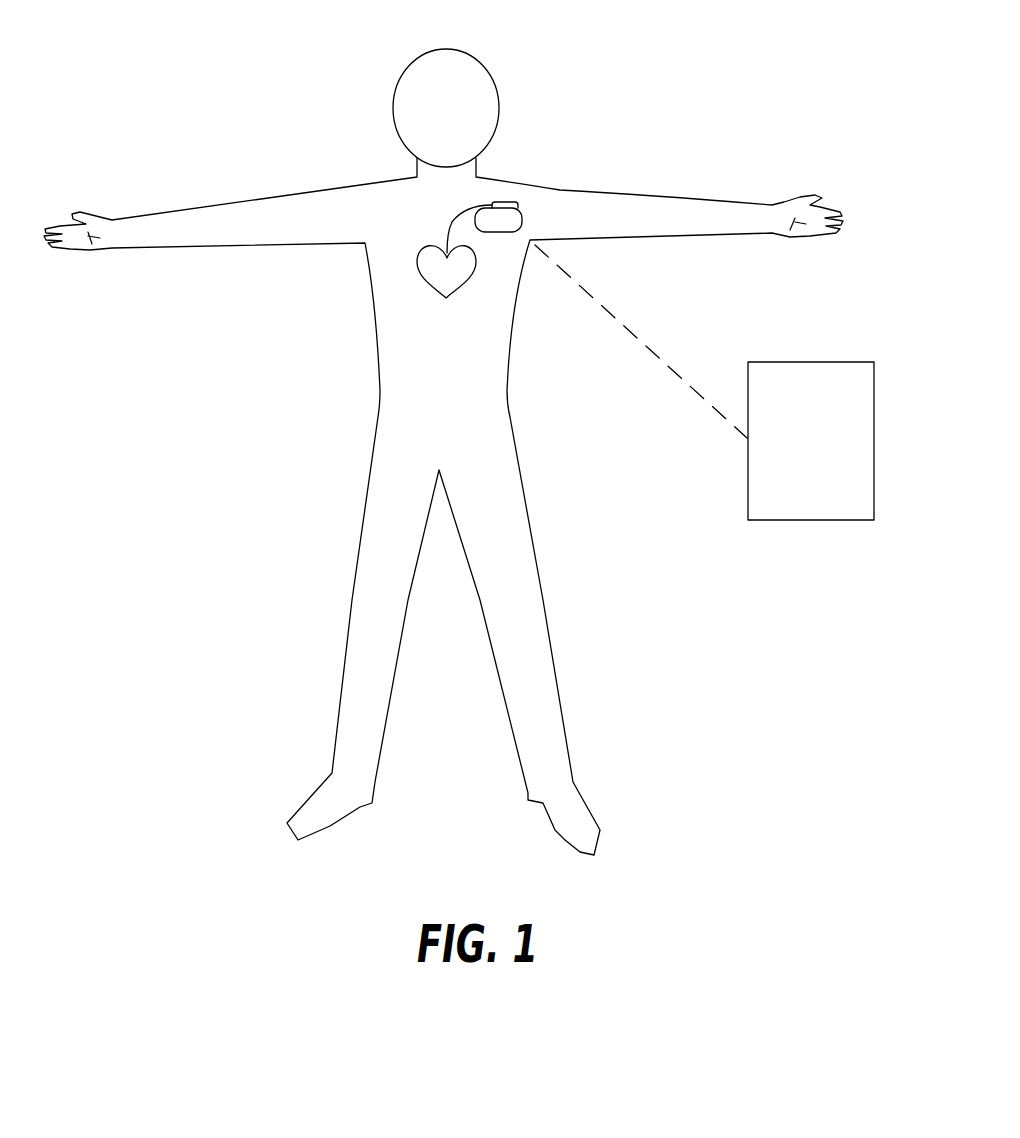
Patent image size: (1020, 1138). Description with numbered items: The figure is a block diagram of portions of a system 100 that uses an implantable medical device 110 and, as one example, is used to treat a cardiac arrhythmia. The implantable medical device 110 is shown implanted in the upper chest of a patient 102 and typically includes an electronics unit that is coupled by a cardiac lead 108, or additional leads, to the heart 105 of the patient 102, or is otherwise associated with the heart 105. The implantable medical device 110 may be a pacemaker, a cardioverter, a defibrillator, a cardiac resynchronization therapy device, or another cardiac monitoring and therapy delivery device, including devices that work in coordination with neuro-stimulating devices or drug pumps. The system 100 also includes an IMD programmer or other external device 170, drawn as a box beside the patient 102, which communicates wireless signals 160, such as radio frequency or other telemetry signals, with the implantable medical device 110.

The system 100 is at (760, 55).
The patient 102 is at (372, 318).
The heart 105 is at (427, 283).
The cardiac lead 108 is at (457, 217).
The implantable medical device 110 is at (502, 205).
The wireless signals 160 is at (633, 330).
The external device 170 is at (812, 362).